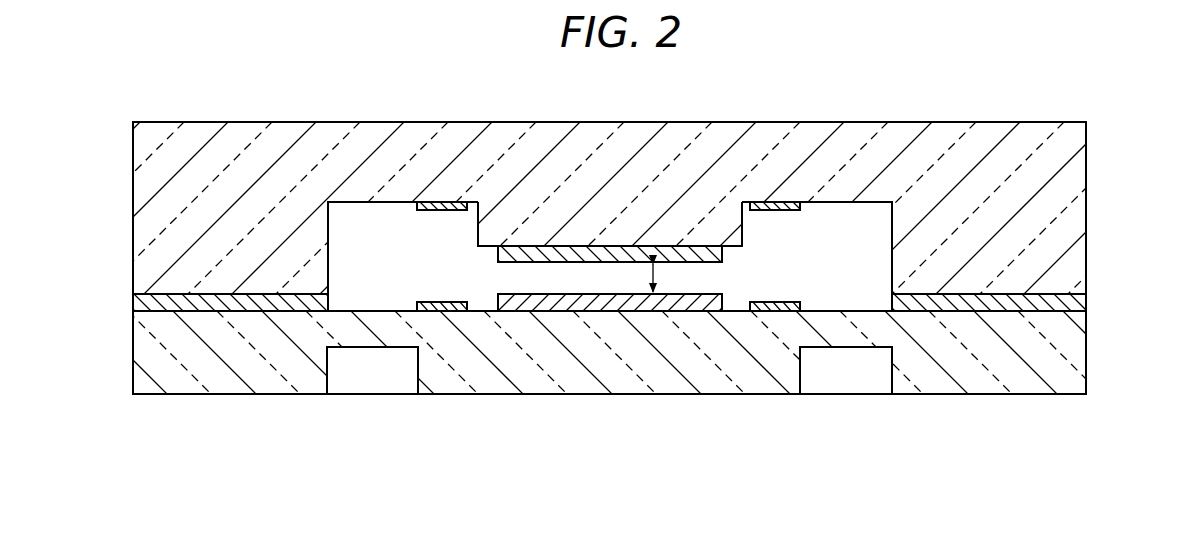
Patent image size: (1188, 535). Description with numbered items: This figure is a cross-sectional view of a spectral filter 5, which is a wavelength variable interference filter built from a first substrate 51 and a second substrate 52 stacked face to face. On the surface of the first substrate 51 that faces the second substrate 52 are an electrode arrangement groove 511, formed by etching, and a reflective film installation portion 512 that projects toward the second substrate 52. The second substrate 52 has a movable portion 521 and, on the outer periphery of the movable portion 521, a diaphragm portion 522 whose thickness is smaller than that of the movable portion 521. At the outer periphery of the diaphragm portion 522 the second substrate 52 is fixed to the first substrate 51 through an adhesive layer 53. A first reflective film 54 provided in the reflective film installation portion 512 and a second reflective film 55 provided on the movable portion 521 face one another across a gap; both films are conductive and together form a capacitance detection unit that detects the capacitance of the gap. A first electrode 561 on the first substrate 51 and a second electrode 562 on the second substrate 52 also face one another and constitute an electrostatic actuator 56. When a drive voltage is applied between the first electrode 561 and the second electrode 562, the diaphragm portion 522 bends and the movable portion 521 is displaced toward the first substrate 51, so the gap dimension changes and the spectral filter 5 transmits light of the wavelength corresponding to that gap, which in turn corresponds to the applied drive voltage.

The spectral filter 5 is at (337, 462).
The first substrate 51 is at (143, 153).
The electrode arrangement groove 511 is at (397, 208).
The reflective film installation portion 512 is at (481, 205).
The second substrate 52 is at (143, 362).
The movable portion 521 is at (713, 393).
The diaphragm portion 522 is at (358, 343).
The adhesive layer 53 is at (1087, 302).
The first reflective film 54 is at (577, 243).
The second reflective film 55 is at (565, 304).
The electrostatic actuator 56 is at (372, 220).
The first electrode 561 is at (443, 211).
The second electrode 562 is at (445, 301).